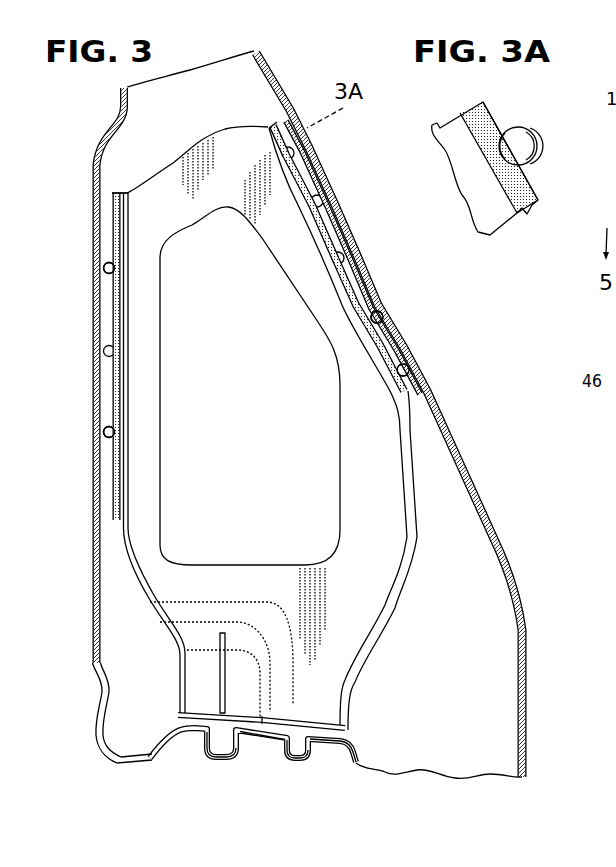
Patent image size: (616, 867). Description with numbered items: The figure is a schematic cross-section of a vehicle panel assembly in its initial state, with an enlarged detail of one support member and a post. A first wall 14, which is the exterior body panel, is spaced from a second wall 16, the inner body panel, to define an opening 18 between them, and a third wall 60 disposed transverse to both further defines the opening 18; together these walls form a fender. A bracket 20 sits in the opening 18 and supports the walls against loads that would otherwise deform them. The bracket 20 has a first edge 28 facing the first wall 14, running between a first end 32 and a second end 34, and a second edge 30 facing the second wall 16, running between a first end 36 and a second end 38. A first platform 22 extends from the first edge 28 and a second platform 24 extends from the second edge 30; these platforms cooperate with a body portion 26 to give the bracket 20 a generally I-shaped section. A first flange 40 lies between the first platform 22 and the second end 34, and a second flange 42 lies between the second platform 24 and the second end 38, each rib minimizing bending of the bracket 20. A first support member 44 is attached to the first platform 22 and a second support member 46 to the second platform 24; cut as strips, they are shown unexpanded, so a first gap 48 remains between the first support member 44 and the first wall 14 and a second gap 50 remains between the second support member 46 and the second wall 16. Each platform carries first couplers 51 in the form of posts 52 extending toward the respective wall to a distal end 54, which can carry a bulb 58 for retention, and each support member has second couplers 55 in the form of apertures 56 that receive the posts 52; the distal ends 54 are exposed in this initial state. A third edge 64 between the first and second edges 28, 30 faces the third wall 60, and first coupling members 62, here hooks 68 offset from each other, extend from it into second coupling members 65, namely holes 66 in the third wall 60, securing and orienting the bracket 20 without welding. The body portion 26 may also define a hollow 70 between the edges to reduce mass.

In FIG. 3, the first wall 14 is at (268, 62).
In FIG. 3, the second wall 16 is at (115, 116).
In FIG. 3, the opening 18 is at (196, 80).
In FIG. 3, the bracket 20 is at (177, 168).
In FIG. 3, the first platform 22 is at (343, 180).
In FIG. 3A, the first platform 22 is at (450, 139).
In FIG. 3, the second platform 24 is at (124, 365).
In FIG. 3, the body portion 26 is at (400, 441).
In FIG. 3, the first edge 28 is at (256, 141).
In FIG. 3, the second edge 30 is at (136, 209).
In FIG. 3, the first end 32 is at (265, 119).
In FIG. 3, the second end 34 is at (356, 760).
In FIG. 3, the first end 36 is at (127, 192).
In FIG. 3, the second end 38 is at (170, 731).
In FIG. 3, the first flange 40 is at (407, 526).
In FIG. 3, the second flange 42 is at (130, 582).
In FIG. 3, the first support member 44 is at (322, 230).
In FIG. 3A, the first support member 44 is at (471, 113).
In FIG. 3, the second support member 46 is at (113, 312).
In FIG. 3, the first gap 48 is at (284, 114).
In FIG. 3, the second gap 50 is at (106, 188).
In FIG. 3, the first coupler 51 is at (106, 246).
In FIG. 3A, the first coupler 51 is at (543, 161).
In FIG. 3, the post 52 is at (104, 434).
In FIG. 3A, the post 52 is at (521, 152).
In FIG. 3A, the distal end 54 is at (504, 136).
In FIG. 3, the second coupler 55 is at (105, 414).
In FIG. 3A, the second coupler 55 is at (503, 105).
In FIG. 3A, the aperture 56 is at (533, 215).
In FIG. 3, the bulb 58 is at (104, 268).
In FIG. 3A, the bulb 58 is at (537, 141).
In FIG. 3, the third wall 60 is at (256, 740).
In FIG. 3, the first coupling member 62 is at (352, 778).
In FIG. 3, the third edge 64 is at (283, 716).
In FIG. 3, the second coupling member 65 is at (268, 756).
In FIG. 3, the hole 66 is at (289, 762).
In FIG. 3, the hook 68 is at (206, 745).
In FIG. 3, the hollow 70 is at (338, 484).